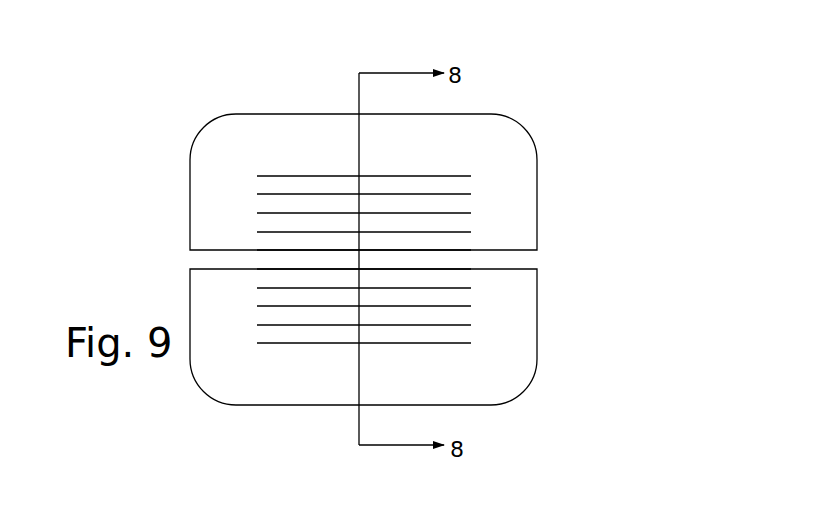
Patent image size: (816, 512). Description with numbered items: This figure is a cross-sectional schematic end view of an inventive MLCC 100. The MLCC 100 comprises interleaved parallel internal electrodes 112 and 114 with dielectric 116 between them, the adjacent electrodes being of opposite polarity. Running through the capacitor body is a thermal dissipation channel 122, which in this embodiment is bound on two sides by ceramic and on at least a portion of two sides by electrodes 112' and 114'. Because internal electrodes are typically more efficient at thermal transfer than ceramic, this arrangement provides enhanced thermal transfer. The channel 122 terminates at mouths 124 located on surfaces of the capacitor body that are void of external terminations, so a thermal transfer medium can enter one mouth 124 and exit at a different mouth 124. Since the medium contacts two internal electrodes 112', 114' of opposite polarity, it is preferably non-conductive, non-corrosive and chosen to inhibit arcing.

The MLCC 100 is at (410, 255).
The internal electrode 112 is at (357, 184).
The electrode 112' is at (267, 183).
The internal electrode 114 is at (425, 208).
The electrode 114' is at (436, 330).
The dielectric 116 is at (515, 218).
The thermal dissipation channel 122 is at (286, 259).
The mouth 124 is at (187, 256).